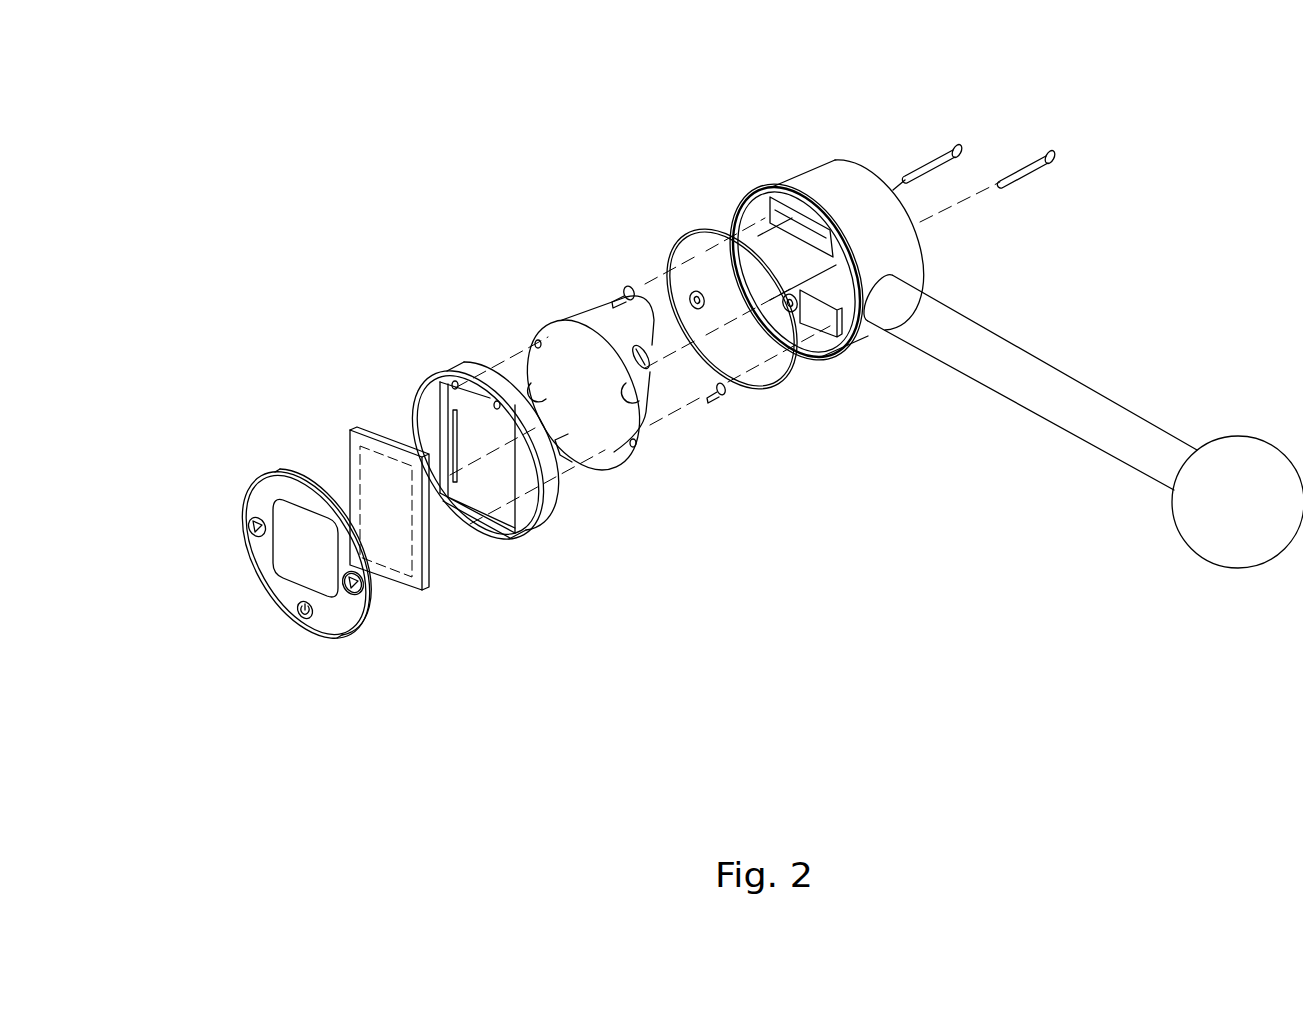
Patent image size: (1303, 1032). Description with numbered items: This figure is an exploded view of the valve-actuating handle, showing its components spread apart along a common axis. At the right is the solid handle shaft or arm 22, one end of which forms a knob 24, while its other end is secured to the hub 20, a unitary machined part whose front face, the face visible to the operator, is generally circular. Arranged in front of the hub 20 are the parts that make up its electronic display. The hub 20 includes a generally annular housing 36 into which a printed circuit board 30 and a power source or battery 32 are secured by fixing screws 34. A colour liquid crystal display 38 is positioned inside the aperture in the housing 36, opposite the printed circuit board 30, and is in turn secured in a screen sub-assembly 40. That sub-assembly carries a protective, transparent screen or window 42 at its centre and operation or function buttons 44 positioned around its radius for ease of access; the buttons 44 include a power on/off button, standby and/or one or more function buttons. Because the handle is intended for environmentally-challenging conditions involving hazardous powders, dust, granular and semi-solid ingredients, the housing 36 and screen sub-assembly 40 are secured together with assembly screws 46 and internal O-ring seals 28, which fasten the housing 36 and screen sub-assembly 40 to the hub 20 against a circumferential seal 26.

The hub 20 is at (808, 172).
The handle shaft or arm 22 is at (1068, 390).
The knob 24 is at (1255, 467).
The circumferential seal 26 is at (700, 229).
The internal O-ring seals 28 is at (792, 312).
The printed circuit board 30 is at (562, 335).
The power source or battery 32 is at (600, 317).
The fixing screws 34 is at (623, 283).
The annular housing 36 is at (475, 363).
The colour liquid crystal display 38 is at (368, 433).
The screen sub-assembly 40 is at (263, 498).
The protective, transparent screen or window 42 is at (290, 572).
The operation or function buttons 44 is at (360, 590).
The assembly screws 46 is at (1047, 148).